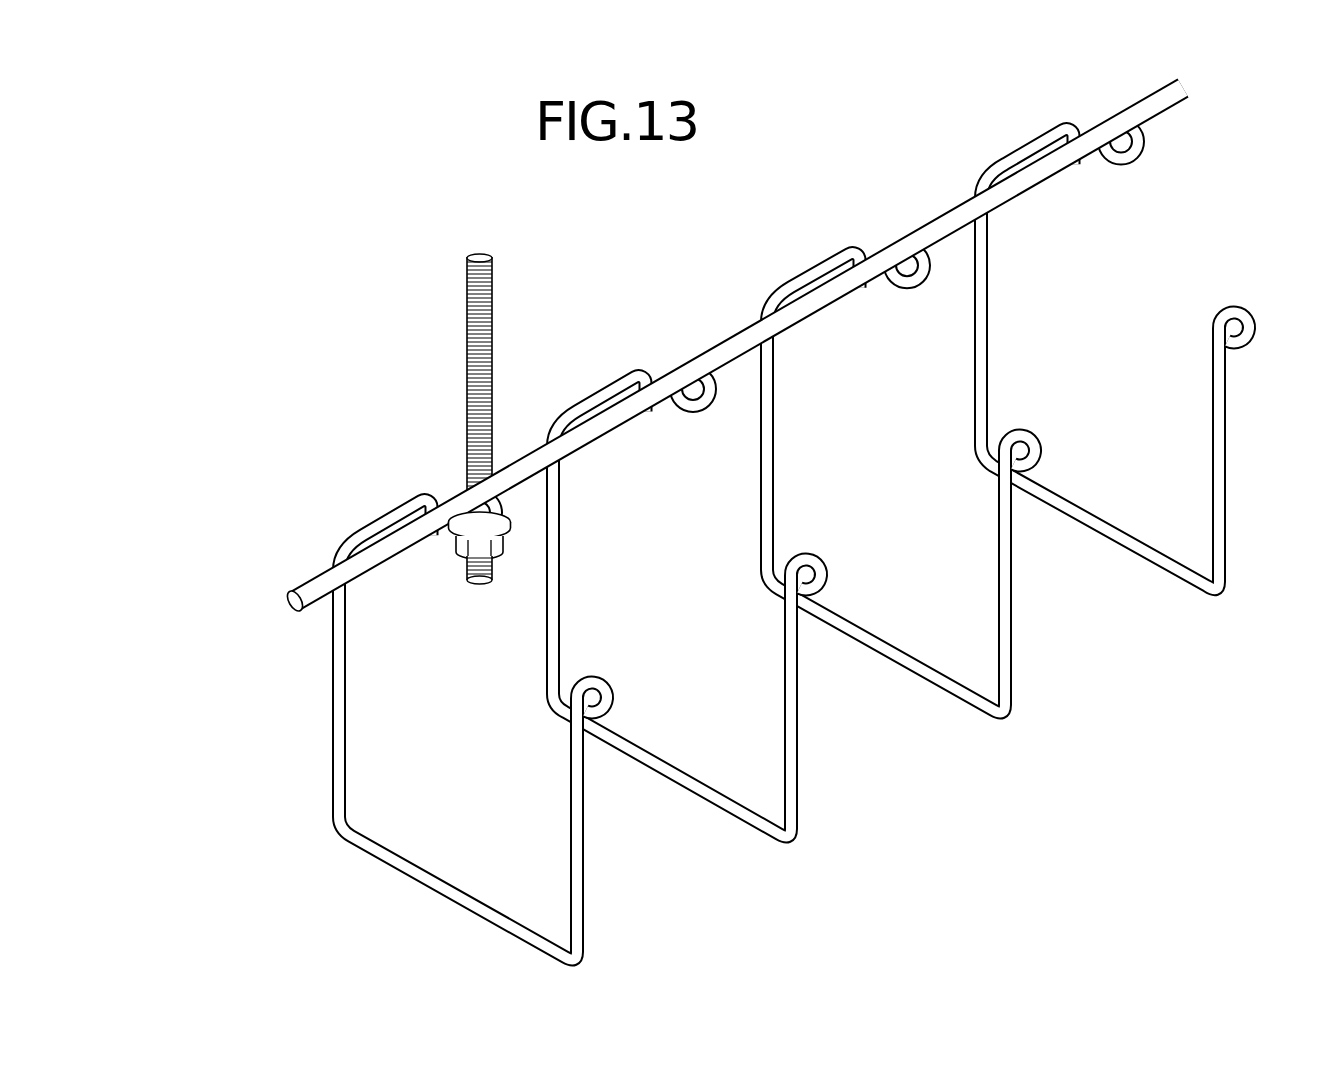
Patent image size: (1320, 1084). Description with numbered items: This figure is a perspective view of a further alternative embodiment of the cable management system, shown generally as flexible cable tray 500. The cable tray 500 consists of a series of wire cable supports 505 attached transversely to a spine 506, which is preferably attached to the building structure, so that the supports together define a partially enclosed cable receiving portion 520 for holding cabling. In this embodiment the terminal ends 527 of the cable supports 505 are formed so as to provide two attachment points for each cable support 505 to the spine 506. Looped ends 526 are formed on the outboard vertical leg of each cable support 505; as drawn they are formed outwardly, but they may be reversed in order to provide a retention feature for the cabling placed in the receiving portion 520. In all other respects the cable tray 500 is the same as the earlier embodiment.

The flexible cable tray 500 is at (356, 433).
The cable supports 505 is at (400, 865).
The spine 506 is at (948, 211).
The cable receiving portion 520 is at (1138, 242).
The looped ends 526 is at (812, 556).
The terminal ends 527 is at (916, 283).